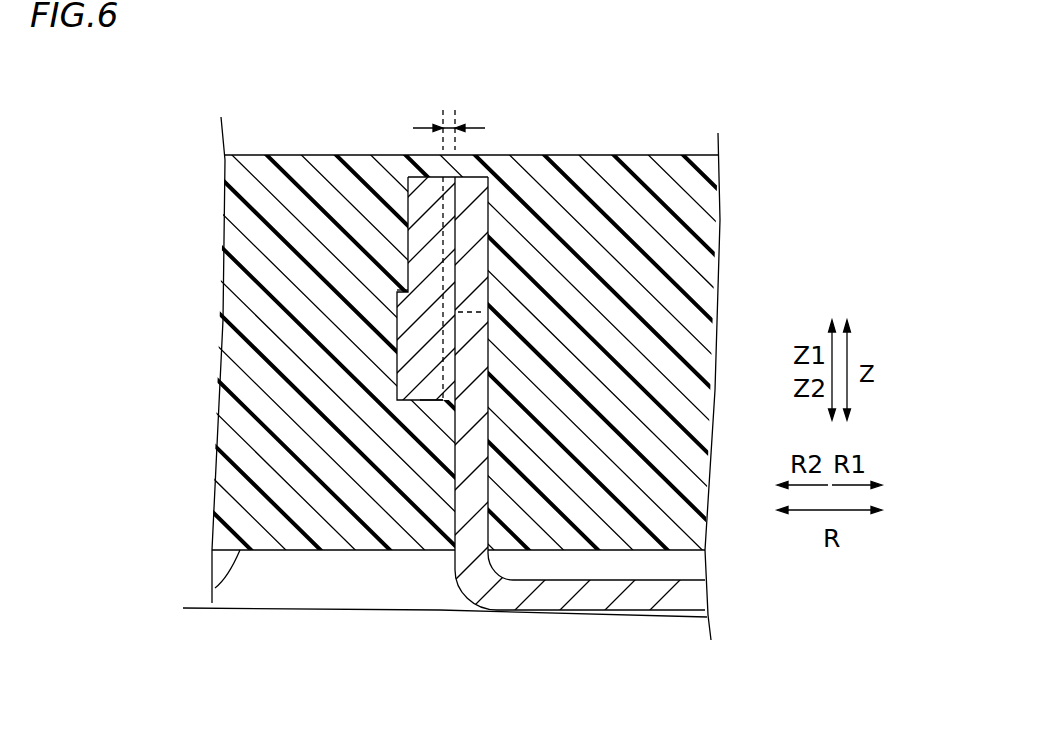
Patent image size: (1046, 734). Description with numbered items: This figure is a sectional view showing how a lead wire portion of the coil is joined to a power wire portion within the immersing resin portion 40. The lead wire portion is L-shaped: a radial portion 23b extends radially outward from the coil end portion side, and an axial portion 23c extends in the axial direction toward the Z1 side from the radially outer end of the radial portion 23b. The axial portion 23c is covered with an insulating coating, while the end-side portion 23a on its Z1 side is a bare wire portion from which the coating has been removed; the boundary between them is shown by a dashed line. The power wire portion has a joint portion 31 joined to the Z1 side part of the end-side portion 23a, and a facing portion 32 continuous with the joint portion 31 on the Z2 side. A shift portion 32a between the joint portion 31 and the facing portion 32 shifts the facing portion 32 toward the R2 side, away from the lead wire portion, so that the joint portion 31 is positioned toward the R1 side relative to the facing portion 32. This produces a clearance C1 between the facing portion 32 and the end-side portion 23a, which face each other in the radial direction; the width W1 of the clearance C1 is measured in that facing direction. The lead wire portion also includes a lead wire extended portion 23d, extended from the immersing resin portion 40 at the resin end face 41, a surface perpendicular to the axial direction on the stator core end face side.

The end-side portion 23a is at (468, 250).
The radial portion 23b is at (688, 597).
The axial portion 23c is at (470, 372).
The lead wire extended portion 23d is at (482, 557).
The joint portion 31 is at (440, 207).
The facing portion 32 is at (417, 333).
The shift portion 32a is at (406, 292).
The immersing resin portion 40 is at (719, 205).
The resin end face 41 is at (217, 588).
The clearance C1 is at (440, 393).
The width of the clearance W1 is at (448, 125).